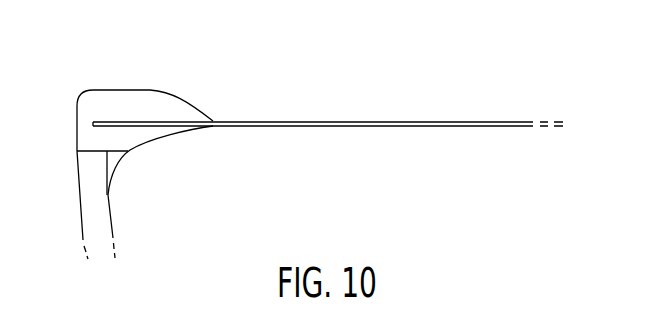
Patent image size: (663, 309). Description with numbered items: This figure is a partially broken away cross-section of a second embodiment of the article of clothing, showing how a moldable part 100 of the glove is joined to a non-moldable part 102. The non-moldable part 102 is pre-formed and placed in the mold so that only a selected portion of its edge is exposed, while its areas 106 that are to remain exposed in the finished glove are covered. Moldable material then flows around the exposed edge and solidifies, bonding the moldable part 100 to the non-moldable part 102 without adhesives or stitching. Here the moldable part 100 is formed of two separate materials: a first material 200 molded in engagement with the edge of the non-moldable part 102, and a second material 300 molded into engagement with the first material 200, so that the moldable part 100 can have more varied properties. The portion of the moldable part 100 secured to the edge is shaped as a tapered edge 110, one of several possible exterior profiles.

The moldable part 100 is at (120, 225).
The non-moldable part 102 is at (310, 121).
The exposed area of the non-moldable part 106 is at (382, 121).
The tapered edge 110 is at (192, 104).
The first material 200 is at (153, 107).
The second material 300 is at (92, 172).